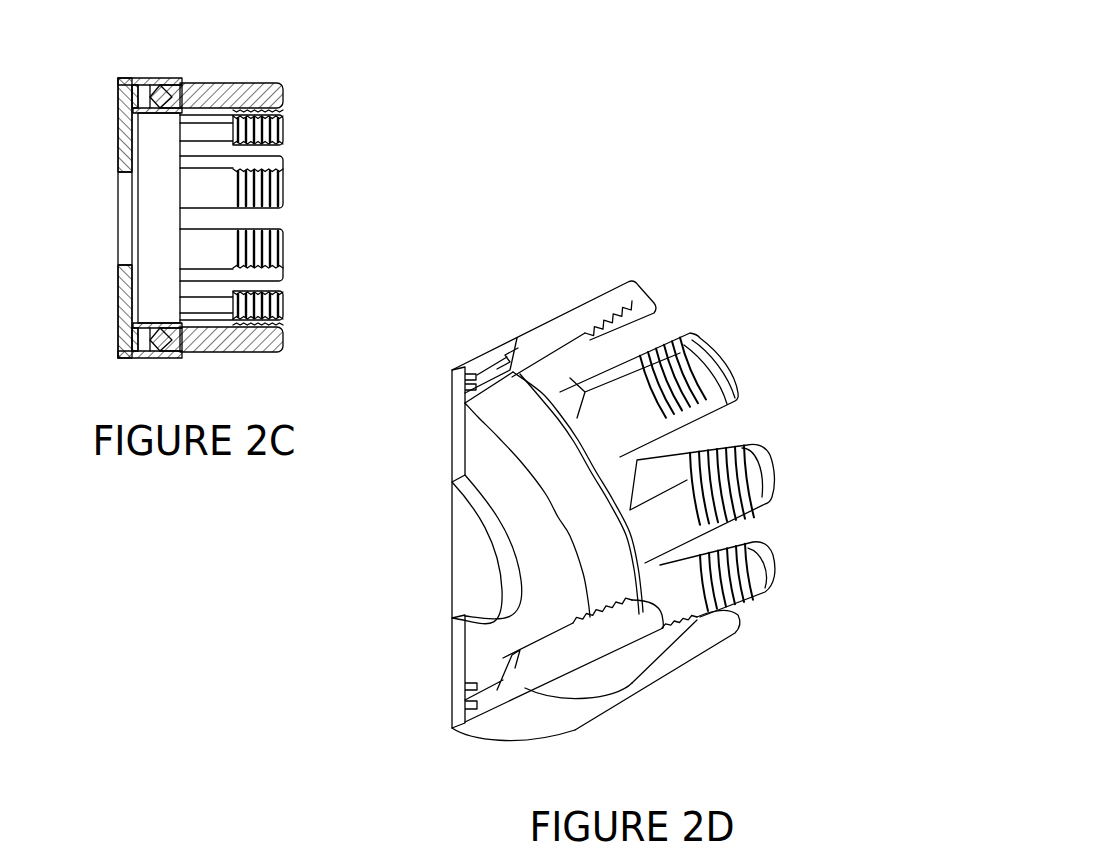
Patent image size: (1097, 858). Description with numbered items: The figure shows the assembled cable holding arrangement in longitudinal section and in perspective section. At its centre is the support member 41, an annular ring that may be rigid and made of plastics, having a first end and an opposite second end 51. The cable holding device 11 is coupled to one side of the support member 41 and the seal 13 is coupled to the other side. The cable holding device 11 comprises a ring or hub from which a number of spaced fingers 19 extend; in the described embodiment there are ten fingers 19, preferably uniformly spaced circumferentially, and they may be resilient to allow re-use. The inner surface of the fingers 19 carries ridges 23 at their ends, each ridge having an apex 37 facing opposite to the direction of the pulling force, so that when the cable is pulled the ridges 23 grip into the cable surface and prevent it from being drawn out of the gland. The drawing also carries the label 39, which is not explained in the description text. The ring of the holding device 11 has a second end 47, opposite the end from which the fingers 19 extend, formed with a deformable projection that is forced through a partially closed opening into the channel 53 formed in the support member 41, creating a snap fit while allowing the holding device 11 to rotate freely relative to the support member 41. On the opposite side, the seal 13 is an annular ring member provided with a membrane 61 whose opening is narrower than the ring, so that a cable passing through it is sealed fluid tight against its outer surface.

In FIG. 2C, the cable holding device 11 is at (330, 60).
In FIG. 2D, the cable holding device 11 is at (785, 290).
In FIG. 2C, the seal 13 is at (118, 128).
In FIG. 2D, the seal 13 is at (453, 730).
In FIG. 2C, the fingers 19 is at (285, 185).
In FIG. 2D, the fingers 19 is at (713, 368).
In FIG. 2C, the ridges 23 is at (285, 128).
In FIG. 2D, the ridges 23 is at (770, 509).
In FIG. 2C, the apex 37 is at (285, 254).
In FIG. 2C, the serrated plate 39 is at (253, 83).
In FIG. 2D, the serrated plate 39 is at (683, 650).
In FIG. 2C, the support member 41 is at (149, 79).
In FIG. 2D, the support member 41 is at (538, 725).
In FIG. 2C, the second end 47 is at (168, 357).
In FIG. 2C, the second end 51 is at (118, 84).
In FIG. 2C, the channel 53 is at (165, 83).
In FIG. 2C, the membrane 61 is at (118, 317).